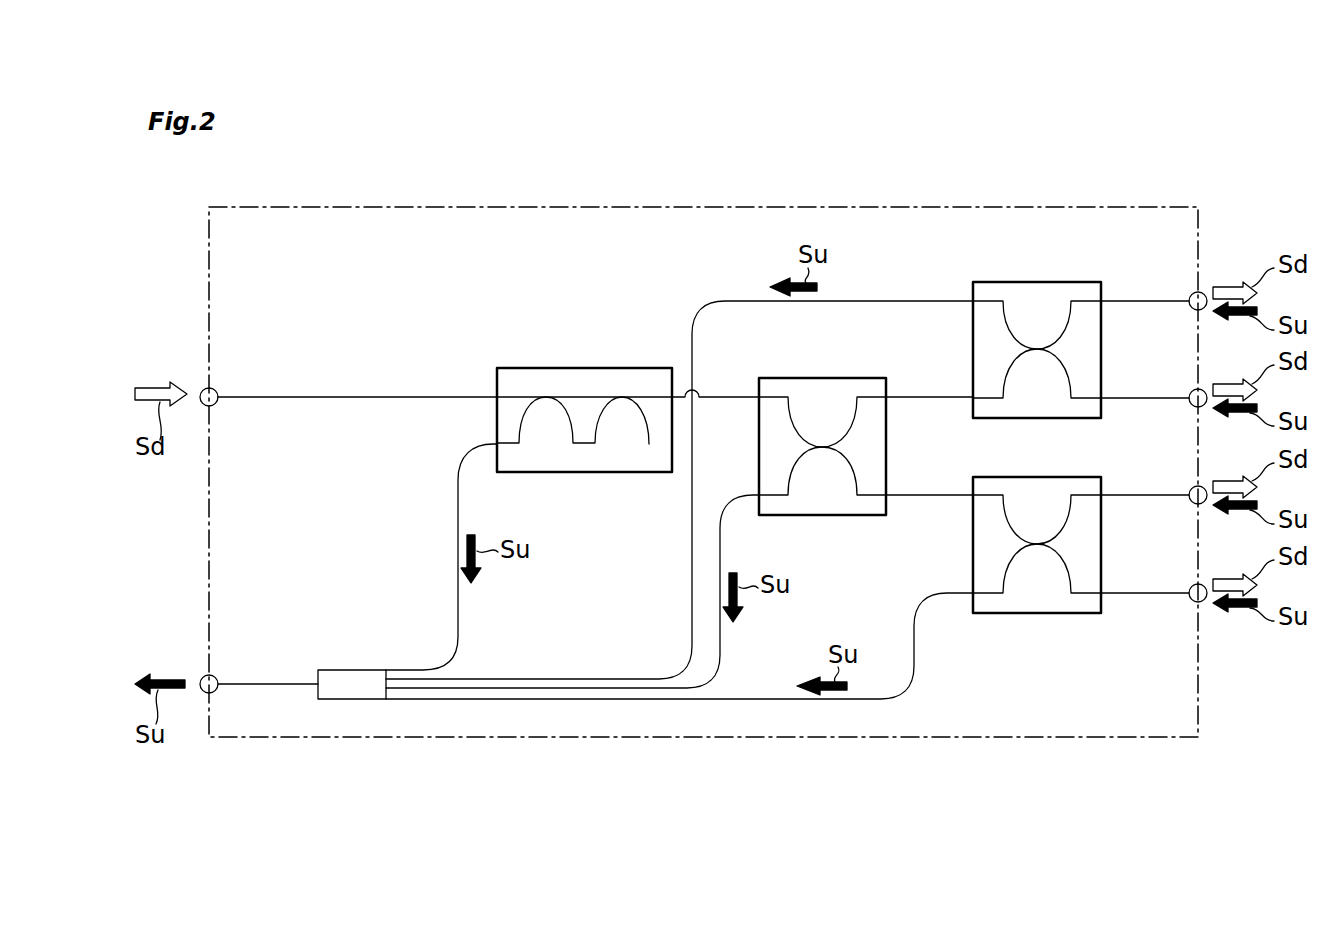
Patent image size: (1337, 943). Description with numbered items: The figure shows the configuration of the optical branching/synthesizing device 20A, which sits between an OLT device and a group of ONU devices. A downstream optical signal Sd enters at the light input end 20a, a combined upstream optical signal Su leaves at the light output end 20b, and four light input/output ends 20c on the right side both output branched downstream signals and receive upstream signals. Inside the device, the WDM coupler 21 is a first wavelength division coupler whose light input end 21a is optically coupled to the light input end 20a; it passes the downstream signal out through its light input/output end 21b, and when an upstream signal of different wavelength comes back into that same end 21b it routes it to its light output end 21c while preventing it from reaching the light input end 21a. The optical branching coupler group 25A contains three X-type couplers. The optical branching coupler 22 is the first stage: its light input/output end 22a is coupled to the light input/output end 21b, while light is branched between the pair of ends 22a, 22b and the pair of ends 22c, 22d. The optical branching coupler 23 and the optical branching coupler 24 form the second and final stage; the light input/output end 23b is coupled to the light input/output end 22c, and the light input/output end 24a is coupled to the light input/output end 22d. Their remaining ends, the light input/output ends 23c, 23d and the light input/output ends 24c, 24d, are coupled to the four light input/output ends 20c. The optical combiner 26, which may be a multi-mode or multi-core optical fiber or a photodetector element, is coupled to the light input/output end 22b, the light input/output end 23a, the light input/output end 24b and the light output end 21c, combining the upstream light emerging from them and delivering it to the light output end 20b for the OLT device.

The optical branching/synthesizing device 20A is at (591, 207).
The optical branching coupler group 25A is at (880, 232).
The light input end 20a is at (216, 388).
The light output end 20b is at (216, 677).
The light input/output ends 20c is at (1203, 294).
The WDM coupler 21 is at (578, 368).
The light input end 21a is at (497, 396).
The light input/output end 21b is at (672, 396).
The light output end 21c is at (497, 445).
The optical branching coupler 22 is at (820, 378).
The light input/output end 22a is at (759, 397).
The light input/output end 22b is at (759, 495).
The light input/output end 22c is at (886, 397).
The light input/output end 22d is at (886, 498).
The optical branching coupler 23 is at (1048, 282).
The light input/output end 23a is at (973, 301).
The light input/output end 23b is at (973, 399).
The light input/output end 23c is at (1101, 301).
The light input/output end 23d is at (1101, 398).
The optical branching coupler 24 is at (1048, 477).
The light input/output end 24a is at (973, 495).
The light input/output end 24b is at (966, 594).
The light input/output end 24c is at (1101, 495).
The light input/output end 24d is at (1101, 593).
The optical combiner 26 is at (356, 670).